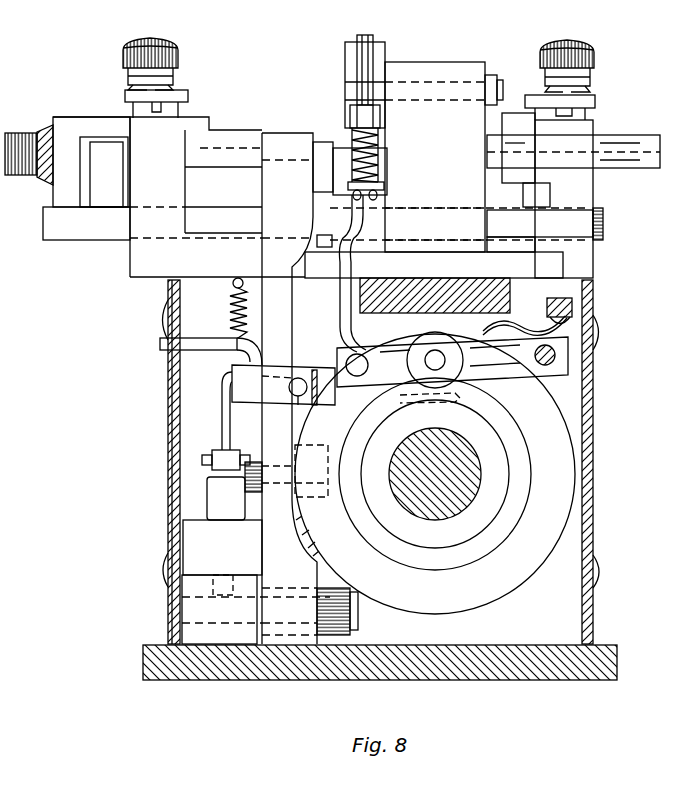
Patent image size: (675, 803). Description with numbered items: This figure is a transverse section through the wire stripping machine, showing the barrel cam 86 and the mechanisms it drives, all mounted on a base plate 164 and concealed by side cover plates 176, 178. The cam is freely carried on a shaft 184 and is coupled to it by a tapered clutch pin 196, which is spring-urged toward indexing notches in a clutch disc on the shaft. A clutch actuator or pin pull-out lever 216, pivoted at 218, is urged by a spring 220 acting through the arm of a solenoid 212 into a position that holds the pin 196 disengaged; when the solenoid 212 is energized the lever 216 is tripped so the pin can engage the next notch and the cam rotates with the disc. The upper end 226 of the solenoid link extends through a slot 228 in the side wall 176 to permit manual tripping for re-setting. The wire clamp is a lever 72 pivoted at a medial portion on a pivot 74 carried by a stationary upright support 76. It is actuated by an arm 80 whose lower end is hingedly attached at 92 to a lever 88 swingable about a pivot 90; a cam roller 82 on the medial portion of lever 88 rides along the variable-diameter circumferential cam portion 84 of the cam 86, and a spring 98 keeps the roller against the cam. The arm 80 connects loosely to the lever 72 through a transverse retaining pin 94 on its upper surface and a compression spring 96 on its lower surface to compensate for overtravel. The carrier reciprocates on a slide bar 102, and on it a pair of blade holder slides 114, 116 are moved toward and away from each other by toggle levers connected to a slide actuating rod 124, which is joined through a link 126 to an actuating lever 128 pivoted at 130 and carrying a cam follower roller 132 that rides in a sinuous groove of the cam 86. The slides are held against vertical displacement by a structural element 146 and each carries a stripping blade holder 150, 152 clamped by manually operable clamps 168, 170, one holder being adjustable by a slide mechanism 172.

The lever 72 is at (381, 46).
The pivot 74 is at (497, 82).
The stationary upright support 76 is at (465, 64).
The arm 80 is at (354, 70).
The cam roller 82 is at (436, 332).
The circumferential cam portion 84 is at (504, 394).
The barrel cam 86 is at (564, 449).
The lever 88 is at (470, 370).
The pivot 90 is at (548, 364).
The hinged attachment 92 is at (352, 357).
The transverse retaining pin 94 is at (353, 90).
The spring 96 is at (376, 148).
The spring 98 is at (510, 328).
The slide bar 102 is at (441, 295).
The blade holder slide 114 is at (606, 150).
The blade holder slide 116 is at (88, 230).
The slide actuating rod 124 is at (388, 170).
The link 126 is at (320, 188).
The actuating lever 128 is at (276, 195).
The pivot 130 is at (362, 612).
The cam follower roller 132 is at (318, 455).
The structural element 146 is at (170, 128).
The stripping blade holder 150 is at (600, 95).
The stripping blade holder 152 is at (198, 92).
The base plate 164 is at (158, 658).
The manually operable clamp 168 is at (588, 95).
The manually operable clamp 170 is at (187, 92).
The slide mechanism 172 is at (77, 118).
The side cover plate 176 is at (170, 384).
The side cover plate 178 is at (593, 390).
The shaft 184 is at (442, 508).
The clutch pin 196 is at (440, 416).
The solenoid 212 is at (194, 542).
The clutch actuator or pin pull-out lever 216 is at (319, 377).
The pivot 218 is at (306, 398).
The spring 220 is at (232, 308).
The upper end of solenoid link 226 is at (160, 343).
The slot 228 is at (172, 352).